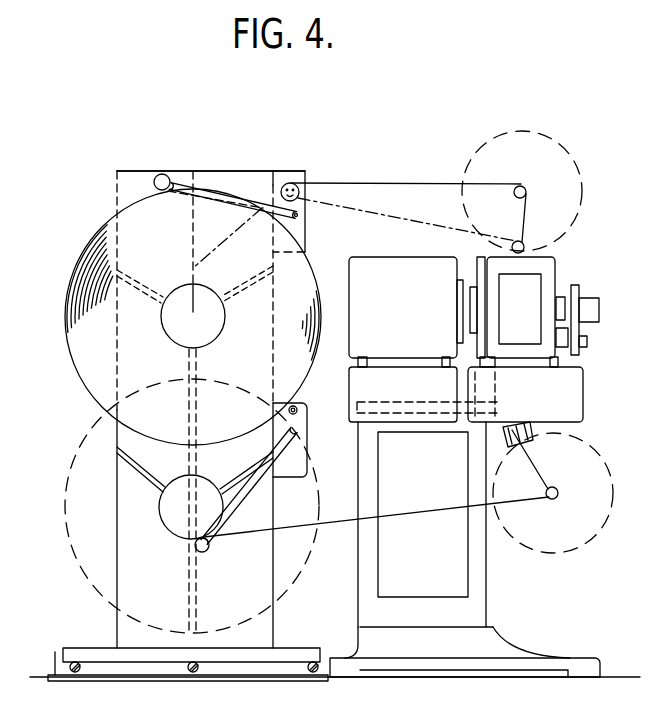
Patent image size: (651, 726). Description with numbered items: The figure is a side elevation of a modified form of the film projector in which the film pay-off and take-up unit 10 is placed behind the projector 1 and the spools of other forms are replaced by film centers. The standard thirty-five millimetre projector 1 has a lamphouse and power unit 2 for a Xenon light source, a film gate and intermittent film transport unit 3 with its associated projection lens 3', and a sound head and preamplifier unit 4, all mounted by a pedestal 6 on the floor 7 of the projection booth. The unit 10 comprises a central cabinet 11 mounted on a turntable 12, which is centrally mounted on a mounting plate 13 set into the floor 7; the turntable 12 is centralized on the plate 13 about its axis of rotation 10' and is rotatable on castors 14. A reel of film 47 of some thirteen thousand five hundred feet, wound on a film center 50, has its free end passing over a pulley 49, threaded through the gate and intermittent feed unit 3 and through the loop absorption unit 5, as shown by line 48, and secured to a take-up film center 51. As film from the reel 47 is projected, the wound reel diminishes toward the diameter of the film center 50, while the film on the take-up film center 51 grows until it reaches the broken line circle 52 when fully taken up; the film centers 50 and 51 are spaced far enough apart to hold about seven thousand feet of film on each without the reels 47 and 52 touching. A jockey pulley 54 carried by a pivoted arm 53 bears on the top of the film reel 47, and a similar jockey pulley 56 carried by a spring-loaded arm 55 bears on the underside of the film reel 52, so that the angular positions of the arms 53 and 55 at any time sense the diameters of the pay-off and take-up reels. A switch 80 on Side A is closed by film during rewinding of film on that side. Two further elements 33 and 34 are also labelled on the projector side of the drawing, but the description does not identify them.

The film projector 1 is at (461, 320).
The lamphouse and power unit 2 is at (348, 277).
The film gate and intermittent film transport unit 3 is at (503, 298).
The projection lens 3' is at (579, 307).
The sound head and preamplifier unit 4 is at (583, 395).
The loop absorption unit 5 is at (457, 577).
The pedestal 6 is at (520, 644).
The floor 7 is at (615, 676).
The film pay-off and take-up unit 10 is at (211, 365).
The axis of rotation 10' is at (215, 368).
The central cabinet 11 is at (228, 171).
The turntable 12 is at (300, 648).
The mounting plate 13 is at (63, 649).
The castors 14 is at (185, 668).
The upper drive pulley 33 is at (527, 190).
The lower drive pulley 34 is at (557, 492).
The reel of film 47 is at (108, 215).
The film line 48 is at (435, 183).
The pulley 49 is at (297, 183).
The film center 50 is at (173, 338).
The take-up film center 51 is at (168, 532).
The broken line circle 52 is at (80, 438).
The pivoted arm 53 is at (177, 170).
The jockey pulley 54 is at (155, 177).
The spring-loaded arm 55 is at (240, 503).
The jockey pulley 56 is at (205, 553).
The switch 80 is at (296, 409).